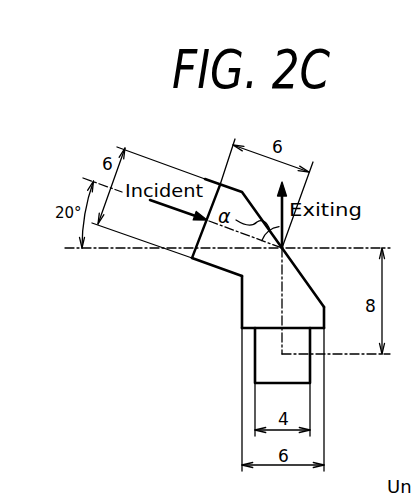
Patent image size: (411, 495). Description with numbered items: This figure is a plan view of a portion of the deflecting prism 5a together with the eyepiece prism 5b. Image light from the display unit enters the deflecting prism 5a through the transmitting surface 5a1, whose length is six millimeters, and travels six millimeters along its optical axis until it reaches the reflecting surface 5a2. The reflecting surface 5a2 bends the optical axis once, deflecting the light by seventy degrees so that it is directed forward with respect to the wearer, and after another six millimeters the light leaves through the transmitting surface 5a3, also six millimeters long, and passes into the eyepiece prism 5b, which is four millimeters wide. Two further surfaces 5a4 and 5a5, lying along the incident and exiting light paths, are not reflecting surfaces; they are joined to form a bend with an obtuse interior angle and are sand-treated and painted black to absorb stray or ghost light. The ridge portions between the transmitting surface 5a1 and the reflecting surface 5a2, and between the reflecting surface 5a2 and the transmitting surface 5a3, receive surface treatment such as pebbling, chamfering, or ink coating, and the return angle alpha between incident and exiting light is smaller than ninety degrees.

The deflecting prism 5a is at (262, 219).
The transmitting surface 5a1 is at (199, 239).
The reflecting surface 5a2 is at (294, 264).
The transmitting surface 5a3 is at (248, 329).
The light-absorbing surface 5a4 is at (213, 267).
The light-absorbing surface 5a5 is at (241, 307).
The eyepiece prism 5b is at (295, 365).